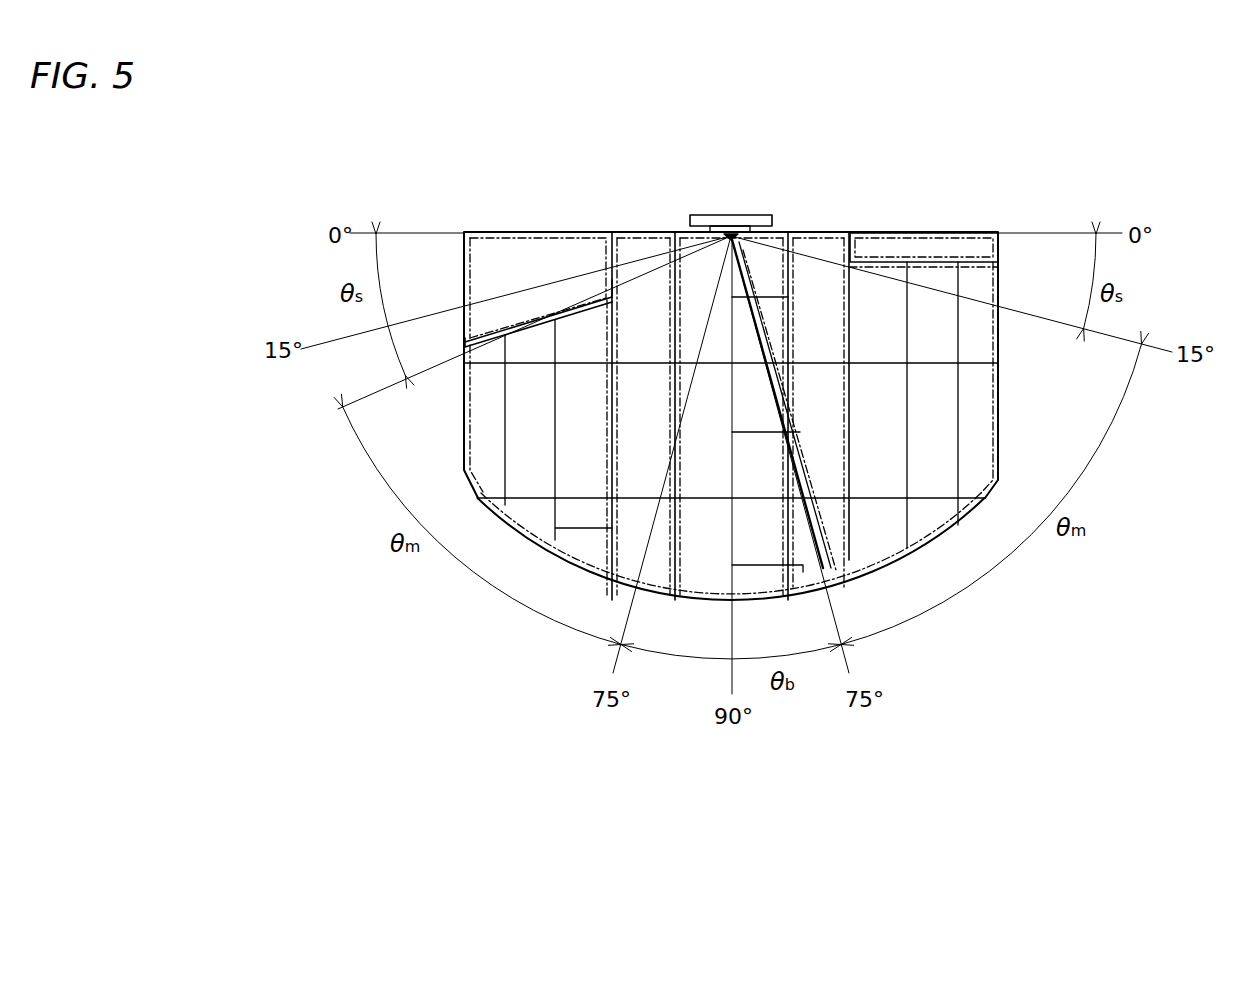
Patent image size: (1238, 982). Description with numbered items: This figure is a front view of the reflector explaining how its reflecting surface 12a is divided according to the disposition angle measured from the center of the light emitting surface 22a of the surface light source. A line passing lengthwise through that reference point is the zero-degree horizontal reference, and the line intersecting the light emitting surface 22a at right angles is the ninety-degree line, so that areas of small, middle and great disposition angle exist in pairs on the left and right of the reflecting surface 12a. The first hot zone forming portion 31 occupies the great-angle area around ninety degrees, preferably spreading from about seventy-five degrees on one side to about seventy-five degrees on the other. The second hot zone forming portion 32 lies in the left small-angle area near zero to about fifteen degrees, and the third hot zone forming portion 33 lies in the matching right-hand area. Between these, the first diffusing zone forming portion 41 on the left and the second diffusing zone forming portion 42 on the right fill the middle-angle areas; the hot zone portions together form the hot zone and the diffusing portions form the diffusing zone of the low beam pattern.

The reflecting surface 12a is at (625, 232).
The light emitting surface 22a is at (740, 236).
The first hot zone forming portion 31 is at (698, 593).
The second hot zone forming portion 32 is at (526, 232).
The third hot zone forming portion 33 is at (946, 232).
The first diffusing zone forming portion 41 is at (533, 532).
The second diffusing zone forming portion 42 is at (943, 530).